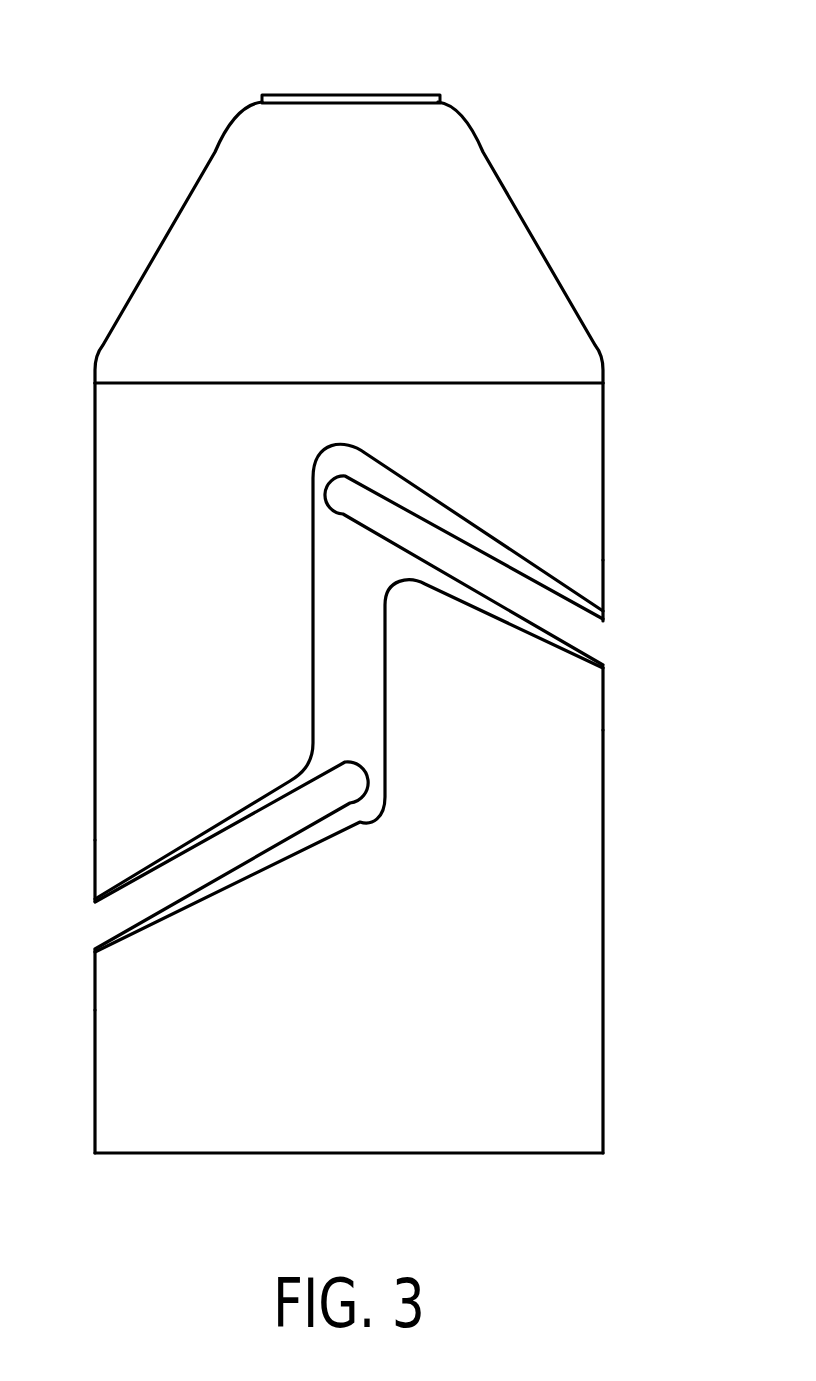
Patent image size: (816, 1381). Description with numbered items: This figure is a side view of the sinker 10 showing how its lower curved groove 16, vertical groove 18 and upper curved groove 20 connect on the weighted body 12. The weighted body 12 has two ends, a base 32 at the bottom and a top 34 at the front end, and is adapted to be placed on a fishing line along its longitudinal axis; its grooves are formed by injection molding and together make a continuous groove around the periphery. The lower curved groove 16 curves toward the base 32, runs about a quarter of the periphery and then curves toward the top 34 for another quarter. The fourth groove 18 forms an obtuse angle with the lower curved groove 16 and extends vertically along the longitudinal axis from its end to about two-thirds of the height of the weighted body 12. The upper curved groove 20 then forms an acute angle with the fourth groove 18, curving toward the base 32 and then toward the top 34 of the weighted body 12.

The sinker 10 is at (86, 92).
The weighted body 12 is at (125, 483).
The lower curved groove 16 is at (125, 910).
The fourth groove 18 is at (335, 623).
The upper curved groove 20 is at (582, 637).
The base 32 is at (498, 1155).
The top 34 is at (455, 108).